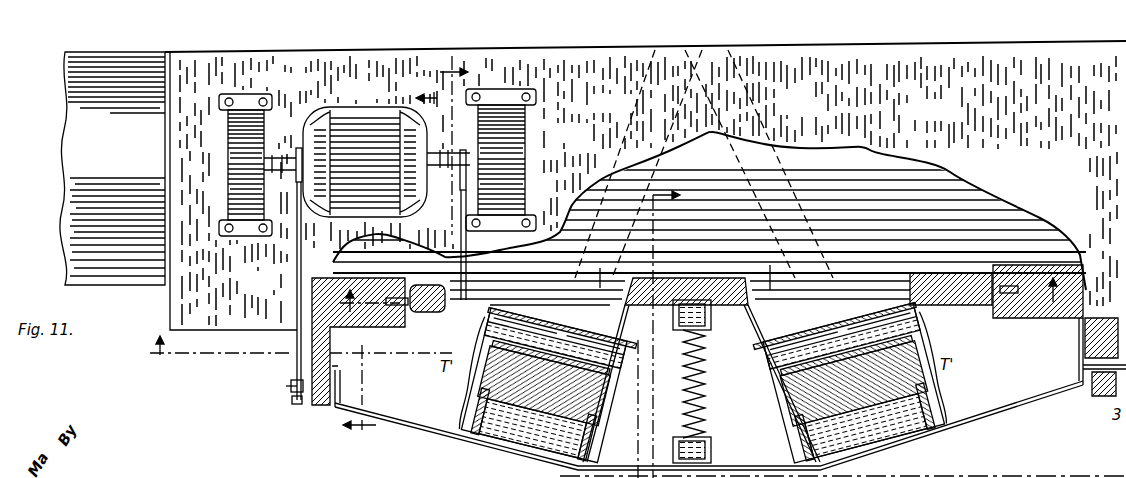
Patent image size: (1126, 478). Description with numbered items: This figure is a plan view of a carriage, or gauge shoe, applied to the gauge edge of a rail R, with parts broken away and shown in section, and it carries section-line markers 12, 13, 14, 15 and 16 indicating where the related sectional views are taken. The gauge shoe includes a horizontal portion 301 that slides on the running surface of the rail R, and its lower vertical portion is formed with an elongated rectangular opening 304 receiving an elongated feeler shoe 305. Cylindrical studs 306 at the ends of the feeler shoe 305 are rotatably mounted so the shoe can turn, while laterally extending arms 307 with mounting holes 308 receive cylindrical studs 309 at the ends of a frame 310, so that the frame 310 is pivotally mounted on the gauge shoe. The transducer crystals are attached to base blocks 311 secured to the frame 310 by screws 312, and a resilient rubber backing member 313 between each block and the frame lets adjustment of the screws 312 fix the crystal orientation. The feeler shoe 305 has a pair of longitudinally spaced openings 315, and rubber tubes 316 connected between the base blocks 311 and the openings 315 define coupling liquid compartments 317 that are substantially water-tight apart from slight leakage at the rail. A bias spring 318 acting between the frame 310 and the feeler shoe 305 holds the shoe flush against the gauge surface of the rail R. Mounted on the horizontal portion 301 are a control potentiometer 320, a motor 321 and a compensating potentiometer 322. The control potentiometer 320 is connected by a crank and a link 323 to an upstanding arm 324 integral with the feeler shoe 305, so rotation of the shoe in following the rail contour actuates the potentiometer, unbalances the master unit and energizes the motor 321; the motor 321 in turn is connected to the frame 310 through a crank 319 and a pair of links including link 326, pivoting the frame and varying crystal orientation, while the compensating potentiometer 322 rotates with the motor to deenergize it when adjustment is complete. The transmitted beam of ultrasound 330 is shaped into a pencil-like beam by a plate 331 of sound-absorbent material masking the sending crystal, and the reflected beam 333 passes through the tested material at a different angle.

The rail R is at (92, 182).
The horizontal portion 301 is at (948, 117).
The elongated rectangular opening 304 is at (986, 320).
The feeler shoe 305 is at (676, 282).
The cylindrical studs 306 is at (380, 330).
The laterally extending arms 307 is at (325, 358).
The mounting holes 308 is at (297, 405).
The cylindrical studs 309 is at (290, 386).
The frame 310 is at (445, 440).
The base blocks 311 is at (592, 412).
The screws 312 is at (472, 440).
The backing member 313 is at (590, 448).
The openings 315 is at (688, 261).
The rubber tubes 316 is at (596, 378).
The coupling liquid compartments 317 is at (495, 327).
The bias spring 318 is at (464, 200).
The crank 319 is at (297, 156).
The control potentiometer 320 is at (520, 128).
The motor 321 is at (350, 118).
The compensating potentiometer 322 is at (240, 120).
The link 323 is at (470, 240).
The upstanding arm 324 is at (448, 316).
The link 326 is at (296, 258).
The transmitted beam of ultrasound 330 is at (645, 112).
The plate 331 is at (548, 252).
The reflected beam of ultrasound 333 is at (742, 105).
The section line 12- 12 is at (221, 360).
The section line 13- 13 is at (445, 143).
The section line 14- 14 is at (390, 262).
The section line 15- 15 is at (659, 323).
The section line 16- 16 is at (708, 302).